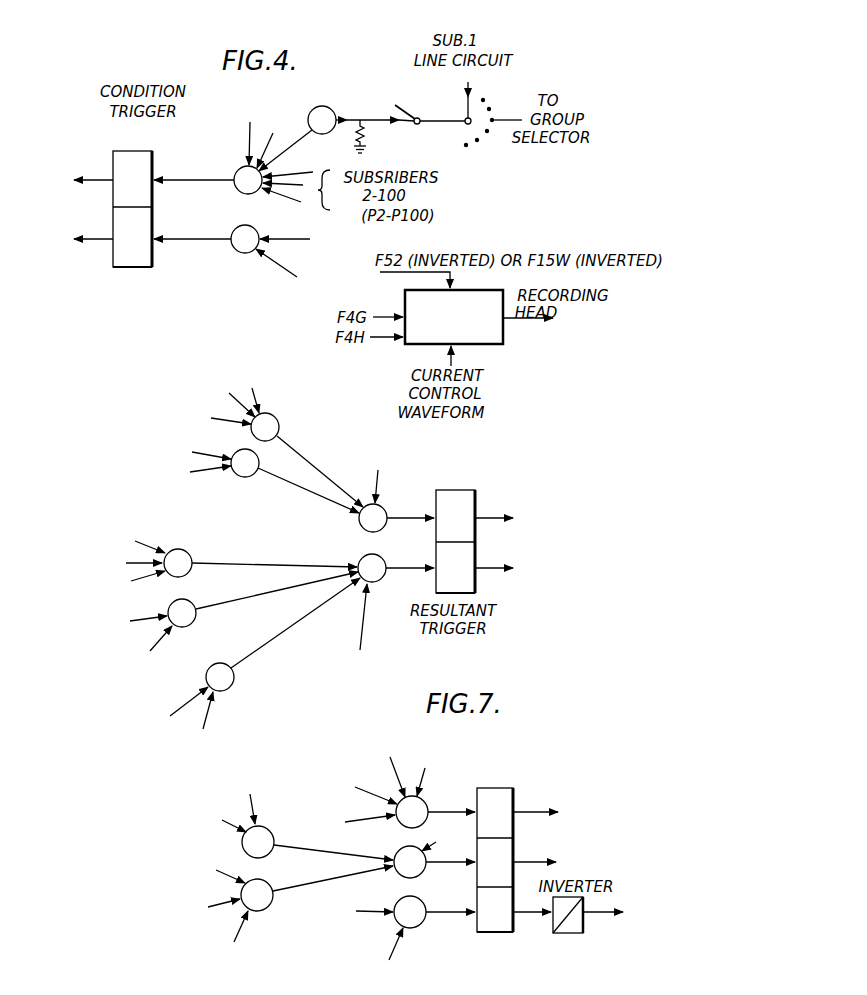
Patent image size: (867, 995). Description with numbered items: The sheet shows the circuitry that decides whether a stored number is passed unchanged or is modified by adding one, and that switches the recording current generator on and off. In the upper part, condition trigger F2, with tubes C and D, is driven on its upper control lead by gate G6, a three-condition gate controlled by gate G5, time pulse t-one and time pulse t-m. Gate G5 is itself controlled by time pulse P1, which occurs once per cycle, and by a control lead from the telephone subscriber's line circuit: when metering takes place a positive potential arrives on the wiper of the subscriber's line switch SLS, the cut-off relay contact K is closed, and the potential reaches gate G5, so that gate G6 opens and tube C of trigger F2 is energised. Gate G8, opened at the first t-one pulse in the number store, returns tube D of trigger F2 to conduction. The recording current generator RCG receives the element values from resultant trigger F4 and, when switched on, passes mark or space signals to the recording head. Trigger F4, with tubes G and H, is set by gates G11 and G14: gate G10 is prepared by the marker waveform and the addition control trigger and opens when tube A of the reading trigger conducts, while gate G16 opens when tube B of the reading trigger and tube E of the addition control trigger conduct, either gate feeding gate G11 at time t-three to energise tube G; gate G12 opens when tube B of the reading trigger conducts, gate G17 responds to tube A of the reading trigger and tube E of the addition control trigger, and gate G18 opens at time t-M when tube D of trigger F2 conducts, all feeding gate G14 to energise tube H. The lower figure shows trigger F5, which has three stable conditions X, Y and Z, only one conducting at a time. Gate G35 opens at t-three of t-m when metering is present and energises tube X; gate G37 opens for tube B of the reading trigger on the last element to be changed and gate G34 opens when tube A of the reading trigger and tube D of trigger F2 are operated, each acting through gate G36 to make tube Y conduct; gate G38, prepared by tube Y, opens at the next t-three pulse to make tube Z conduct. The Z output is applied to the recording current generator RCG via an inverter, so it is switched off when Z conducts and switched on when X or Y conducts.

In FIG. 4, the condition trigger F2 is at (113, 198).
In FIG. 4, the gate G5 is at (359, 108).
In FIG. 4, the time pulse P1 is at (333, 107).
In FIG. 4, the cut-off relay contact K is at (431, 115).
In FIG. 4, the subscriber's line switch SLS is at (464, 134).
In FIG. 4, the gate G6 is at (233, 151).
In FIG. 4, the gate G8 is at (243, 249).
In FIG. 4, the recording current generator RCG is at (461, 319).
In FIG. 4, the gate G10 is at (273, 437).
In FIG. 4, the gate G16 is at (256, 471).
In FIG. 4, the gate G11 is at (396, 490).
In FIG. 4, the resultant trigger F4 is at (474, 531).
In FIG. 4, the gate G14 is at (391, 605).
In FIG. 4, the gate G12 is at (225, 558).
In FIG. 4, the gate G17 is at (228, 620).
In FIG. 4, the gate G18 is at (254, 663).
In FIG. 7, the gate G37 is at (292, 823).
In FIG. 7, the gate G34 is at (285, 906).
In FIG. 7, the gate G35 is at (394, 783).
In FIG. 7, the gate G36 is at (434, 859).
In FIG. 7, the gate G38 is at (405, 936).
In FIG. 7, the trigger F5 is at (517, 846).